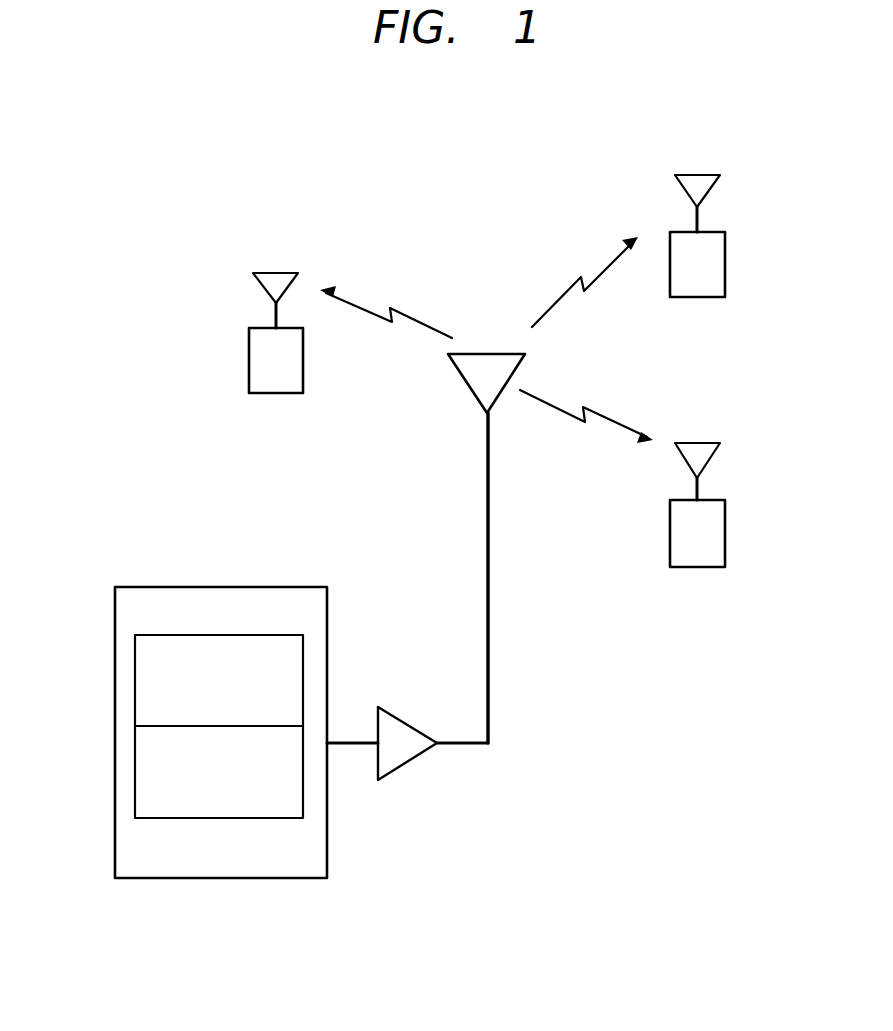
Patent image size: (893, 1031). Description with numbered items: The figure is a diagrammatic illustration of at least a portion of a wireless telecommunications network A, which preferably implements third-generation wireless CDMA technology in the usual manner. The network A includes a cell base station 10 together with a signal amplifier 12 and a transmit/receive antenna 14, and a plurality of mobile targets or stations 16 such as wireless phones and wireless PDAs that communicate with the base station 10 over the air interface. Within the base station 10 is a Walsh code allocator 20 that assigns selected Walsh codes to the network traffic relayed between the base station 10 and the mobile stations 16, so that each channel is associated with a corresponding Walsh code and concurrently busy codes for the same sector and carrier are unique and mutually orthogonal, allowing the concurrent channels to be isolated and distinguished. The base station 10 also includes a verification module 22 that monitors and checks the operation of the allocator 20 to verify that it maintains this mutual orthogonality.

The wireless telecommunications network A is at (300, 178).
The cell base station 10 is at (115, 607).
The signal amplifier 12 is at (401, 719).
The transmit/receive antenna 14 is at (488, 354).
The mobile stations 16 is at (303, 365).
The Walsh code allocator 20 is at (166, 635).
The verification module 22 is at (254, 819).